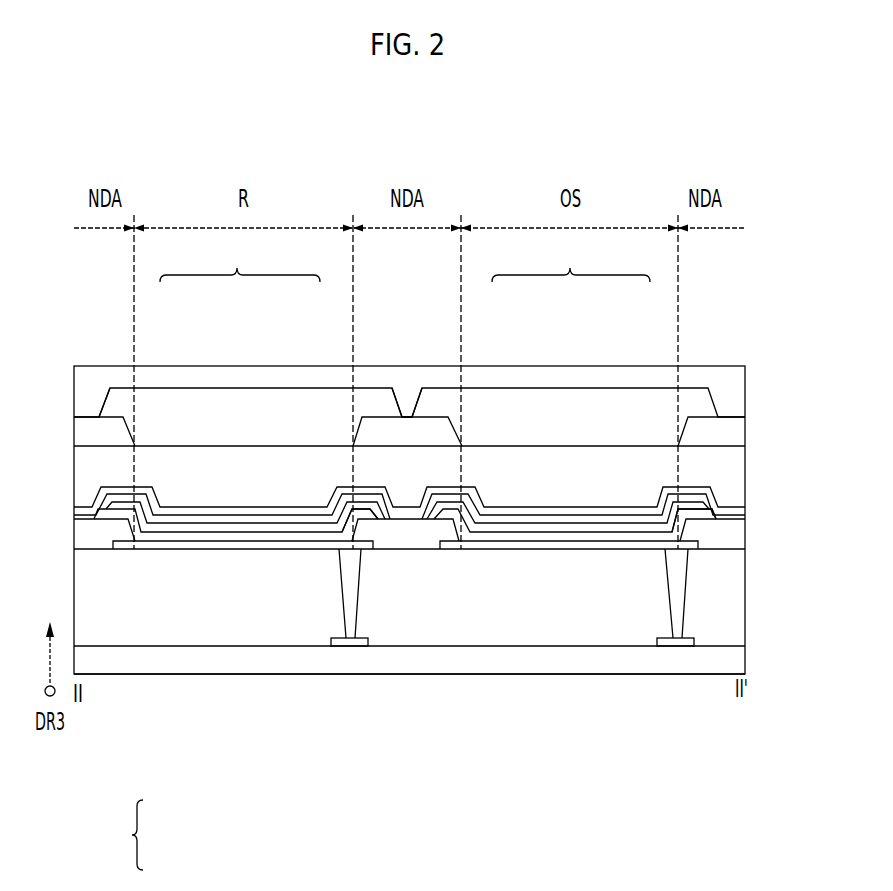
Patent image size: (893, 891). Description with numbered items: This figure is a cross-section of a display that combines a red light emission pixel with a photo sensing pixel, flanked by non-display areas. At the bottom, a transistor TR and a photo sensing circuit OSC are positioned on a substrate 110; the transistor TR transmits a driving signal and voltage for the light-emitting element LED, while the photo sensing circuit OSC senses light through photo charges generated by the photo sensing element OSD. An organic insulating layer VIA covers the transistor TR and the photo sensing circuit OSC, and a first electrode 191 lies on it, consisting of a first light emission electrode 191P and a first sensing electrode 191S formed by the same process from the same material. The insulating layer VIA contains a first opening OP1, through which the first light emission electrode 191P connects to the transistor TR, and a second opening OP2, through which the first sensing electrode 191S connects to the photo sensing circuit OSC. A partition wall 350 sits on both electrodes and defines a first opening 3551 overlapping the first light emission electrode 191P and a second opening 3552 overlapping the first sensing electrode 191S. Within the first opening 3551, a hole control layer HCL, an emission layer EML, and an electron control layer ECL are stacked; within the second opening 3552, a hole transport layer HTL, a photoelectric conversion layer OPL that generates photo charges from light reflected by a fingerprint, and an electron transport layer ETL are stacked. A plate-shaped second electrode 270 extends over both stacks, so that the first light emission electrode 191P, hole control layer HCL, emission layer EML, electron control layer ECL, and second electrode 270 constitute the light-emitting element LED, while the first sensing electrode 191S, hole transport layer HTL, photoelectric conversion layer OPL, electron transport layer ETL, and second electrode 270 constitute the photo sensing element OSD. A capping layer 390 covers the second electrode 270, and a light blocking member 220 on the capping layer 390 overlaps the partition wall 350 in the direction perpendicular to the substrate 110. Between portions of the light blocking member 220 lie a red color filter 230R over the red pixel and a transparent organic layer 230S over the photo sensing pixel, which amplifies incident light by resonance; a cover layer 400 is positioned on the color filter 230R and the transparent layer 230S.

The cover layer 400 is at (730, 390).
The light blocking member 220 is at (730, 431).
The capping layer 390 is at (730, 472).
The second electrode 270 is at (308, 508).
The partition wall 350 is at (86, 533).
The first opening 3551 is at (358, 527).
The second opening 3552 is at (684, 512).
The red color filter 230R is at (122, 398).
The transparent layer 230S is at (443, 398).
The first light emission electrode 191P is at (168, 542).
The first sensing electrode 191S is at (501, 541).
The first electrode 191 is at (120, 835).
The substrate 110 is at (192, 663).
The insulating layer VIA is at (730, 613).
The first opening OP1 is at (354, 583).
The second opening OP2 is at (674, 585).
The transistor TR is at (338, 647).
The photo sensing circuit OSC is at (665, 648).
The hole control layer HCL is at (195, 533).
The emission layer EML is at (225, 525).
The electron control layer ECL is at (260, 517).
The hole transport layer HTL is at (525, 533).
The photoelectric conversion layer OPL is at (557, 525).
The electron transport layer ETL is at (593, 517).
The light-emitting element LED is at (240, 261).
The photo sensing element OSD is at (571, 261).